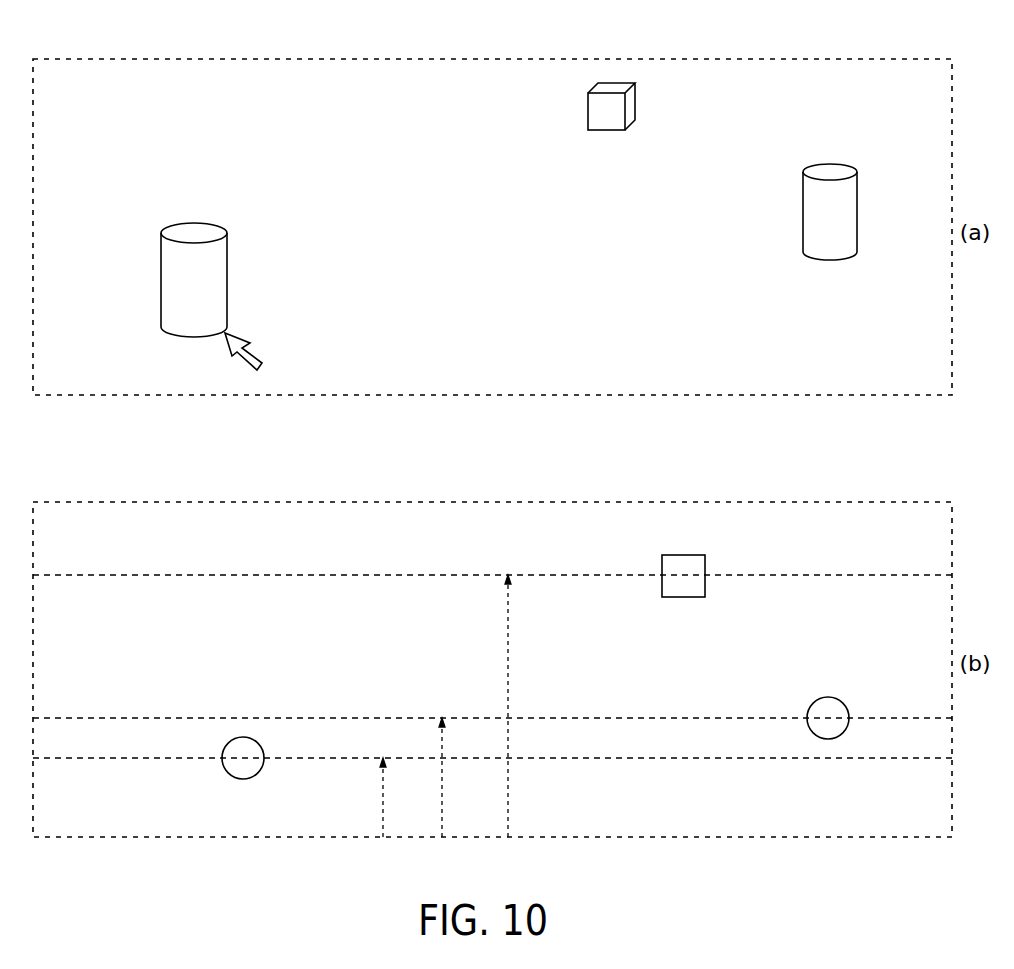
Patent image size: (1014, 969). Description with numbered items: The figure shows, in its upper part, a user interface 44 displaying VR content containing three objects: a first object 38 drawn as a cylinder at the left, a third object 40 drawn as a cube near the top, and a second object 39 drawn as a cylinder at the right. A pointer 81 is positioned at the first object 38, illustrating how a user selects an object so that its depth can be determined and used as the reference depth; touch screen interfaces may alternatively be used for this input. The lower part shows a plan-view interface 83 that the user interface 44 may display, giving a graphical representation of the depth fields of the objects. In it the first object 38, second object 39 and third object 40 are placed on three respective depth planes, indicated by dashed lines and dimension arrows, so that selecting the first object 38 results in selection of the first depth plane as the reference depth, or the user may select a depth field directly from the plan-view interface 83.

The user interface 44 is at (152, 58).
The plan-view interface 83 is at (152, 501).
The first object 38 is at (181, 309).
The second object 39 is at (817, 236).
The third object 40 is at (589, 103).
The pointer 81 is at (252, 346).